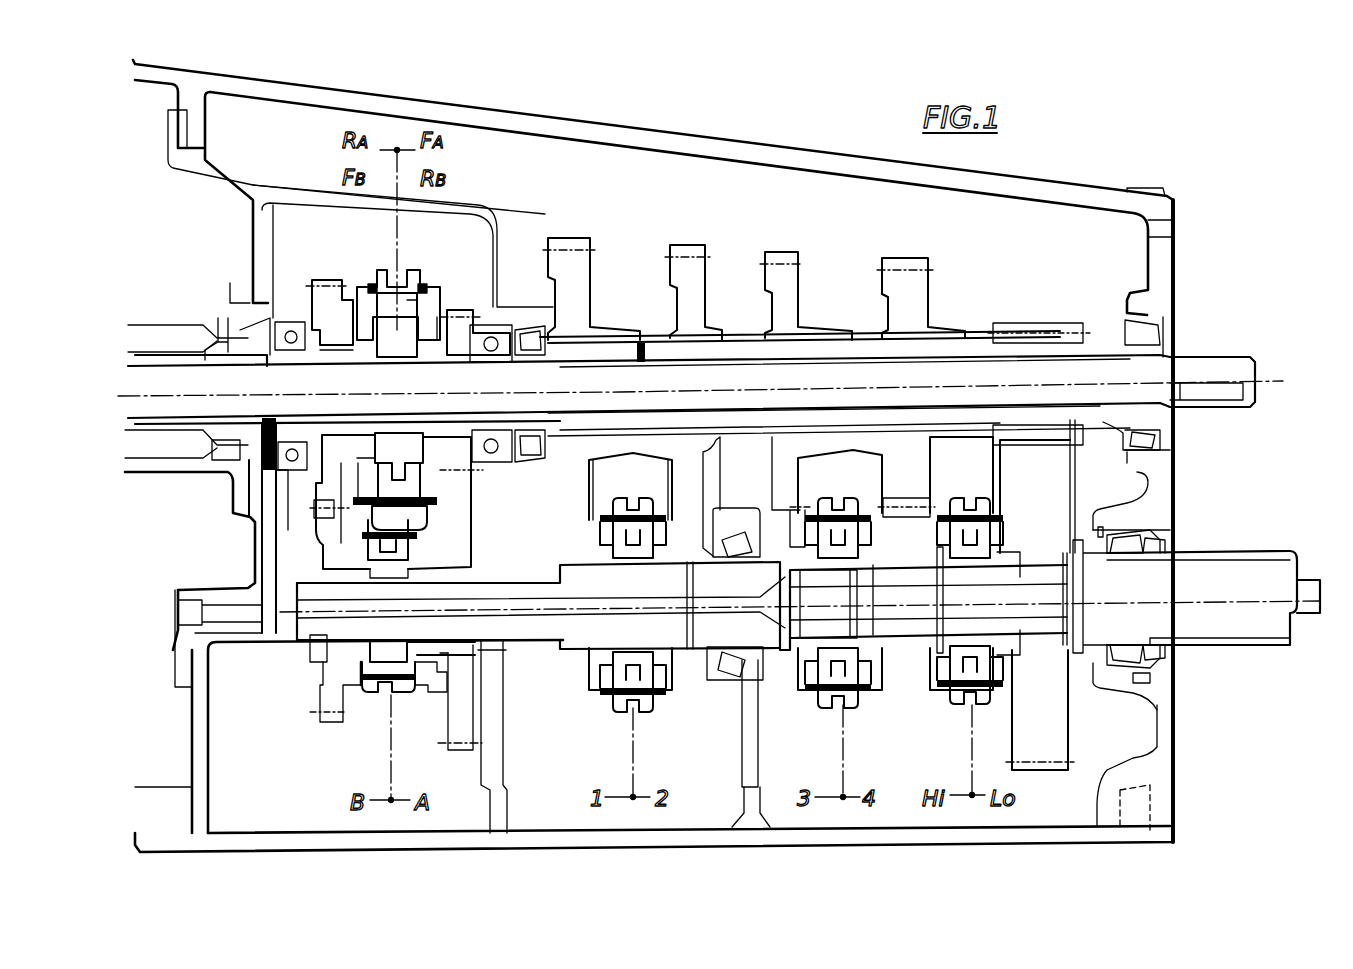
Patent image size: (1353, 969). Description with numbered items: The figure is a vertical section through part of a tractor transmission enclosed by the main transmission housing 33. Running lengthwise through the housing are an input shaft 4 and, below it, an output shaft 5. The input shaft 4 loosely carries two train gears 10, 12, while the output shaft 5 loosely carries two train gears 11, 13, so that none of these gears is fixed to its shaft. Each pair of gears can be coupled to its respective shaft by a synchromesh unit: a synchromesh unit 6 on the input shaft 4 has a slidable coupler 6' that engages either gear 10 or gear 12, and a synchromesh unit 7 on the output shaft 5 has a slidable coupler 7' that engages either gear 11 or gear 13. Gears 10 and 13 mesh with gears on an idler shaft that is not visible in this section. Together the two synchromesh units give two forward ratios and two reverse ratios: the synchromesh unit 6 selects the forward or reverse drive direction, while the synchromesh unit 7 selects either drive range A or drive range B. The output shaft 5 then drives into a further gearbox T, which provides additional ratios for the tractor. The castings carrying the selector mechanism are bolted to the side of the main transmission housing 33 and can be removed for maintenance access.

The main transmission housing 33 is at (200, 737).
The further gearbox T is at (693, 392).
The input shaft 4 is at (258, 375).
The train gear 10 is at (330, 308).
The synchromesh unit 6 is at (396, 355).
The slidable coupler 6' is at (422, 285).
The train gear 12 is at (453, 307).
The train gear 11 is at (338, 557).
The output shaft 5 is at (370, 626).
The slidable coupler 7' is at (362, 704).
The synchromesh unit 7 is at (436, 721).
The train gear 13 is at (463, 720).